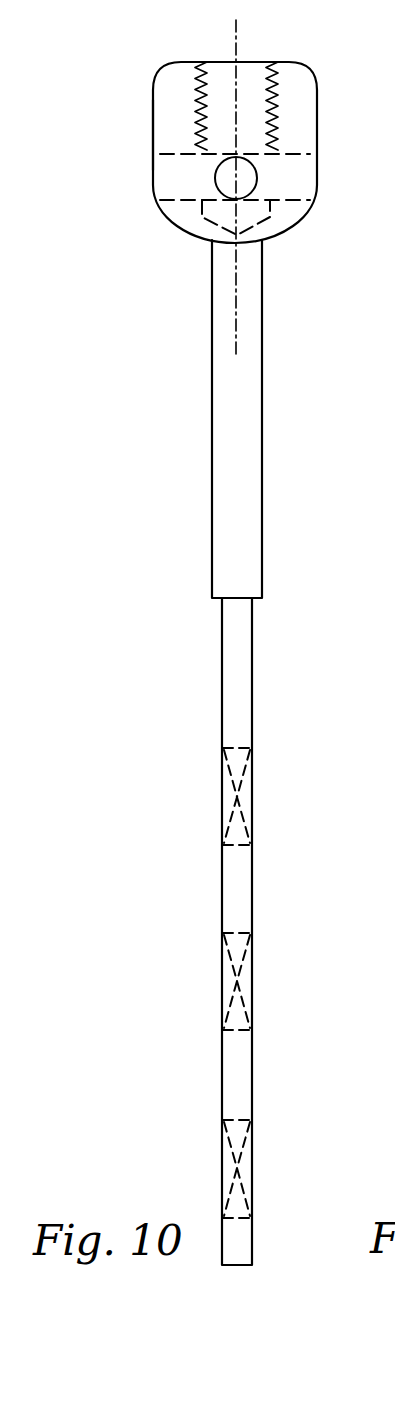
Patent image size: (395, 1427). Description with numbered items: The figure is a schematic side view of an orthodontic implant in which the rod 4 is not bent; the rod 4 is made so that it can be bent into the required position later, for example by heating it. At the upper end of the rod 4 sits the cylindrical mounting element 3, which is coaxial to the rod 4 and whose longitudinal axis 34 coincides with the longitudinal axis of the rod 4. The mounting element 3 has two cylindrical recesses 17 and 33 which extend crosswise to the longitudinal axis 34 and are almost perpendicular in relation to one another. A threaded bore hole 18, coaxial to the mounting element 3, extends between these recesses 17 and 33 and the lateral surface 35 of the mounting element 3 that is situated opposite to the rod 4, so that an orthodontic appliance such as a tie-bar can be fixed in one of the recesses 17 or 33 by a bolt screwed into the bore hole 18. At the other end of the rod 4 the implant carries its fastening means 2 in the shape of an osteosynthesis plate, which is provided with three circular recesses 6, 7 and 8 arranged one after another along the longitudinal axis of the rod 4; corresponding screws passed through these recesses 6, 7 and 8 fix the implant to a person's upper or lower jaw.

The fastening means 2 is at (240, 628).
The mounting element 3 is at (337, 107).
The rod 4 is at (232, 388).
The circular recess 6 is at (240, 795).
The circular recess 7 is at (242, 982).
The circular recess 8 is at (242, 1168).
The cylindrical recess 17 is at (307, 185).
The threaded bore hole 18 is at (250, 78).
The cylindrical recess 33 is at (218, 180).
The longitudinal axis 34 is at (234, 40).
The lateral surface 35 is at (163, 108).